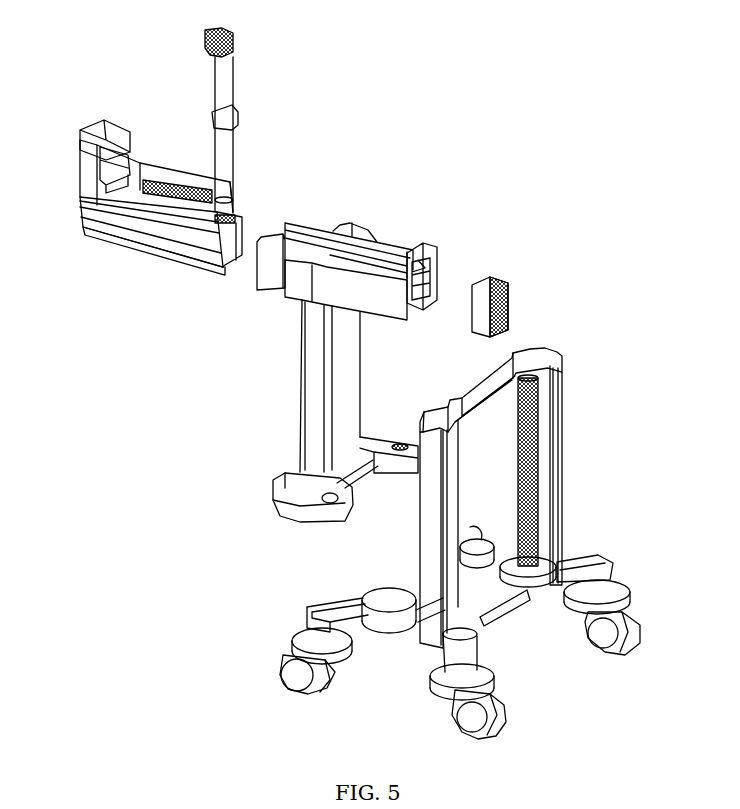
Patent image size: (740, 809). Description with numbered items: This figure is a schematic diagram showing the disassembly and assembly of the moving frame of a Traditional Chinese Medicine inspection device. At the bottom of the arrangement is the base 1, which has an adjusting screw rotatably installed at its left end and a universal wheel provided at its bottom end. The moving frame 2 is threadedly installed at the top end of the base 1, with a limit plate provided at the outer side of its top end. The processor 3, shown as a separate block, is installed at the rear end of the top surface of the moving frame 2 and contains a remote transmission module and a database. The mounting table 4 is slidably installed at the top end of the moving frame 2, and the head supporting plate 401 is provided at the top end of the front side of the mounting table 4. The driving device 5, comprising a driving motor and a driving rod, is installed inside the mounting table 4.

The base 1 is at (562, 490).
The moving frame 2 is at (362, 224).
The processor 3 is at (503, 280).
The mounting table 4 is at (143, 247).
The head supporting plate 401 is at (193, 255).
The driving device 5 is at (100, 167).